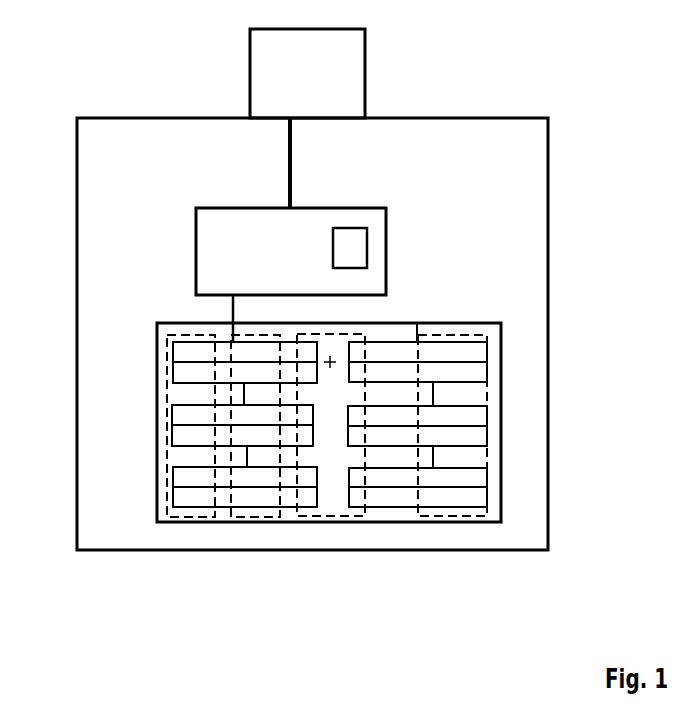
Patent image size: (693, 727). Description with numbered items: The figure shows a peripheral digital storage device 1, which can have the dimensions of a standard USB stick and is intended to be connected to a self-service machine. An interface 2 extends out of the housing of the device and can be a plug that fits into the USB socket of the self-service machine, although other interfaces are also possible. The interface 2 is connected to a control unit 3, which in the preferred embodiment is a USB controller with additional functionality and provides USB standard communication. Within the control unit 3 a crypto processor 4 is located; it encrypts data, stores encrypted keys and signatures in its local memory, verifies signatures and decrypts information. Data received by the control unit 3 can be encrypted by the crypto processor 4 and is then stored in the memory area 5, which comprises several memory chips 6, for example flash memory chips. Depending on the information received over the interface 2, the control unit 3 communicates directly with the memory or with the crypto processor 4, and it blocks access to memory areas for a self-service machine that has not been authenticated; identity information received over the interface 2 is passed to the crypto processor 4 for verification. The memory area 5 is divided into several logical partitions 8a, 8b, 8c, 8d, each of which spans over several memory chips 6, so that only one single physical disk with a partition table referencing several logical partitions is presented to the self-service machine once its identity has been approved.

The peripheral digital storage device 1 is at (548, 203).
The interface 2 is at (365, 78).
The control unit 3 is at (388, 229).
The crypto processor 4 is at (353, 228).
The memory area 5 is at (501, 382).
The memory chip 6 is at (172, 375).
The partition 8a is at (202, 518).
The partition 8b is at (267, 518).
The partition 8c is at (332, 518).
The partition 8d is at (452, 518).